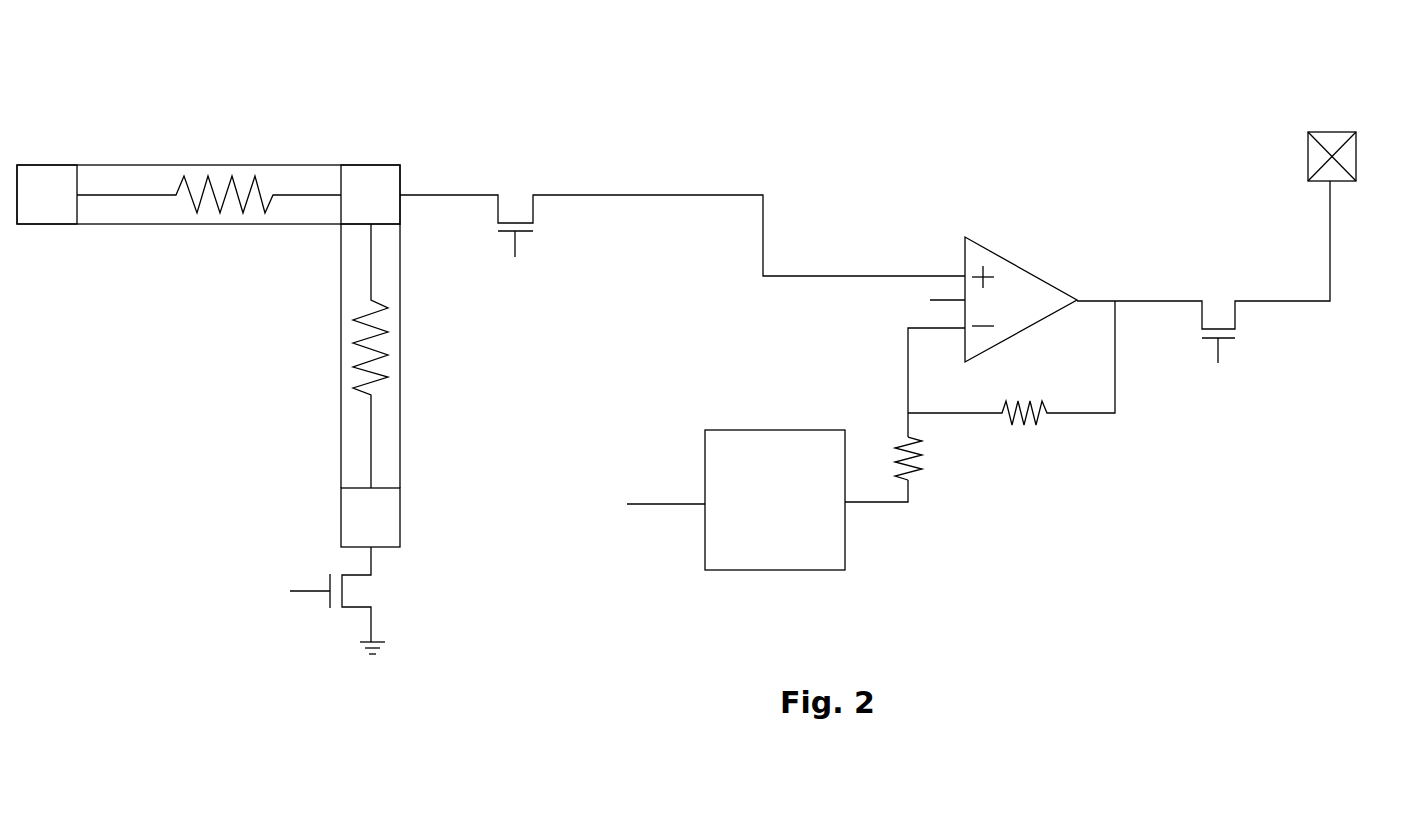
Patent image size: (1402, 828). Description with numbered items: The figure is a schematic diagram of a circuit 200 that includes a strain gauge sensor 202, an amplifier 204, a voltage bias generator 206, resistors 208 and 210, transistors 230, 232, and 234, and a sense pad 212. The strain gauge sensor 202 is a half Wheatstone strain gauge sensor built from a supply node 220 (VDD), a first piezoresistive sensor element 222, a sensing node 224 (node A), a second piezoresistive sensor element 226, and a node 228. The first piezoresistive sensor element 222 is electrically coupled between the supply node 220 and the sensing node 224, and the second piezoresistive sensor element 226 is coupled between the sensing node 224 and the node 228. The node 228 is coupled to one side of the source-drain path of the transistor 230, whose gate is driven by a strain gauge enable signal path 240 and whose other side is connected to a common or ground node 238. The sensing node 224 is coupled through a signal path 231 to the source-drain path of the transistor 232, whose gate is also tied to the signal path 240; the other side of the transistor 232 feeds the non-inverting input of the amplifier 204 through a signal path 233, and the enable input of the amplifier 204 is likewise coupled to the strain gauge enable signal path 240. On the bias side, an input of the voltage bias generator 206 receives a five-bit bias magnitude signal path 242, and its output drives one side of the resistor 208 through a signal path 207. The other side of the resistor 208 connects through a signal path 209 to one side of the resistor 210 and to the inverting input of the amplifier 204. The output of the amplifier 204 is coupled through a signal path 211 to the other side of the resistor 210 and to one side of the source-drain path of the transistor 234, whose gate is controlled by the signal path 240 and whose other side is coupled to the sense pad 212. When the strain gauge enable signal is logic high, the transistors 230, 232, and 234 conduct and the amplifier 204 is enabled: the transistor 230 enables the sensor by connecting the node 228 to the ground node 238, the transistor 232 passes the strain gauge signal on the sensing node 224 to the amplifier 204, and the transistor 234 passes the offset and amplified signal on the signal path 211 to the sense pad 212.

The circuit 200 is at (1003, 64).
The strain gauge sensor 202 is at (236, 148).
The amplifier 204 is at (1025, 268).
The voltage bias generator 206 is at (788, 430).
The signal path 207 is at (851, 501).
The resistor 208 is at (920, 470).
The signal path 209 is at (908, 375).
The resistor 210 is at (1028, 408).
The signal path 211 is at (1135, 300).
The sense pad 212 is at (1308, 155).
The supply node 220 is at (48, 165).
The first piezoresistive sensor element 222 is at (210, 225).
The sensing node 224 is at (365, 165).
The second piezoresistive sensor element 226 is at (341, 365).
The node 228 is at (341, 514).
The transistor 230 is at (330, 600).
The signal path 231 is at (435, 194).
The transistor 232 is at (508, 235).
The signal path 233 is at (713, 194).
The transistor 234 is at (1210, 340).
The common or ground node 238 is at (380, 643).
The strain gauge enable signal path 240 is at (520, 256).
The bias magnitude signal path 242 is at (656, 503).